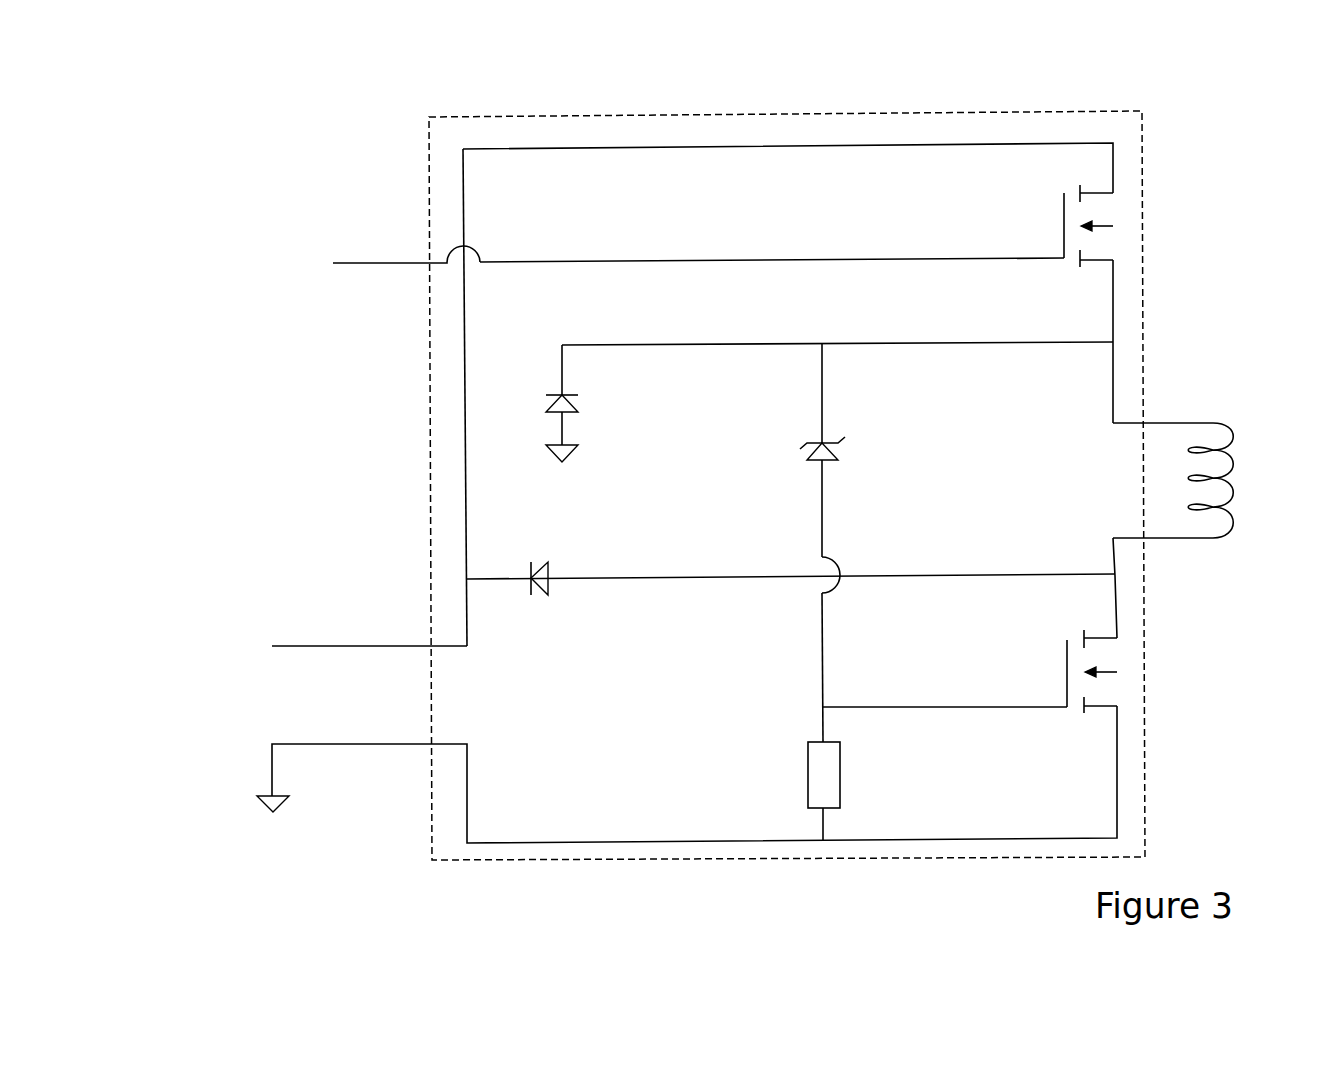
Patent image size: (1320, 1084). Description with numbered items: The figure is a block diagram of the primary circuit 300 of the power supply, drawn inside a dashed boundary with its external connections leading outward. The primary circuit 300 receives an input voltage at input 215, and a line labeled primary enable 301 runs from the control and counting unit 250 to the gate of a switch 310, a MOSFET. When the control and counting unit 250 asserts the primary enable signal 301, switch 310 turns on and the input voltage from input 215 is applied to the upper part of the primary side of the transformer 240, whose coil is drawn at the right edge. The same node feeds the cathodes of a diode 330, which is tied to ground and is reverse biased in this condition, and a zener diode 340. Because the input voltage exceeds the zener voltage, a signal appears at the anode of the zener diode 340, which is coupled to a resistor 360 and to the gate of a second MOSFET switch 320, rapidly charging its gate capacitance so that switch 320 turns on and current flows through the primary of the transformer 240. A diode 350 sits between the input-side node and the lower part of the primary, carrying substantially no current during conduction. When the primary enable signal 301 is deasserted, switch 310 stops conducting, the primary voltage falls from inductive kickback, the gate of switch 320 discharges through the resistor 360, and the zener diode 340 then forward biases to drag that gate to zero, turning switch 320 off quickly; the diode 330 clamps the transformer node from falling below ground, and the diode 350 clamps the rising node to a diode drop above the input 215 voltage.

The primary circuit 300 is at (757, 475).
The primary enable signal 301 is at (772, 246).
The switch 310 is at (1063, 226).
The switch 320 is at (970, 671).
The diode 330 is at (581, 403).
The zener diode 340 is at (842, 543).
The diode 350 is at (555, 566).
The resistor 360 is at (841, 791).
The transformer 240 is at (1211, 506).
The control and counting unit 250 is at (323, 287).
The input 215 is at (319, 645).